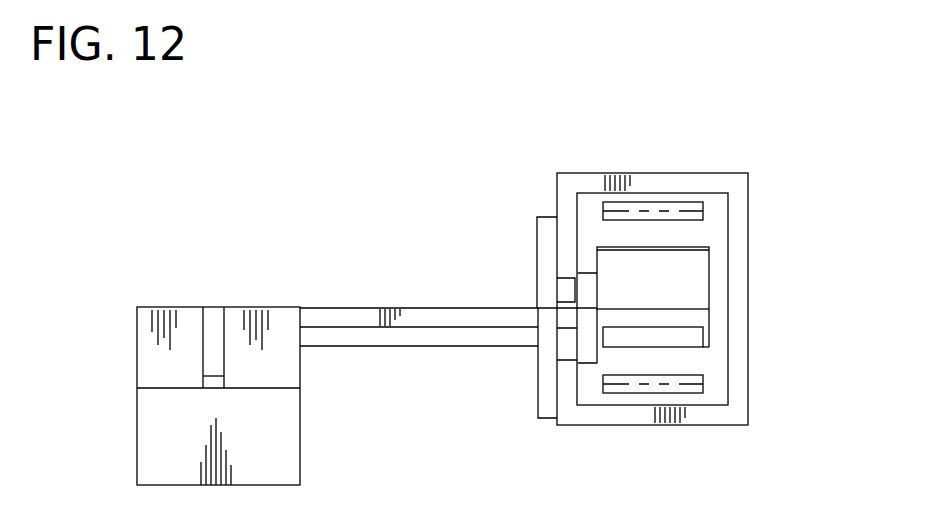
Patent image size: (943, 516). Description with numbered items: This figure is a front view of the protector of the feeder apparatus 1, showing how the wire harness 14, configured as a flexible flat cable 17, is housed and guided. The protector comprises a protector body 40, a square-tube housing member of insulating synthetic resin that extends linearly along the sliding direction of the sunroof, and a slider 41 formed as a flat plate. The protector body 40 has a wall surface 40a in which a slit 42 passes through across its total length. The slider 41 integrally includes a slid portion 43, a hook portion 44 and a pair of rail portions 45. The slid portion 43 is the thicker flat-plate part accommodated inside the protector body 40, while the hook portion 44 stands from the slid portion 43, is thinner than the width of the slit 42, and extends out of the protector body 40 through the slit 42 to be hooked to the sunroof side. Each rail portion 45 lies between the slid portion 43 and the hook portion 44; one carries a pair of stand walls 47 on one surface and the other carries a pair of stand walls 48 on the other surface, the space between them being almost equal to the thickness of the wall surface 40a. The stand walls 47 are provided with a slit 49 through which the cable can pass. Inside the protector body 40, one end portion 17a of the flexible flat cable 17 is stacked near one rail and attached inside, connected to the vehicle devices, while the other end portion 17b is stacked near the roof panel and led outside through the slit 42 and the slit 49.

The feeder apparatus 1 is at (402, 246).
The wire harness 14 is at (643, 402).
The flexible flat cable 17 is at (692, 394).
The one end portion 17a is at (692, 394).
The other end portion 17b is at (680, 202).
The protector body 40 is at (600, 426).
The wall surface 40a is at (531, 418).
The slider 41 is at (342, 296).
The slit 42 is at (565, 283).
The slid portion 43 is at (710, 278).
The hook portion 44 is at (137, 432).
The rail portions 45 is at (537, 288).
The stand walls 47 is at (592, 276).
The stand walls 48 is at (557, 367).
The slit 49 is at (587, 310).